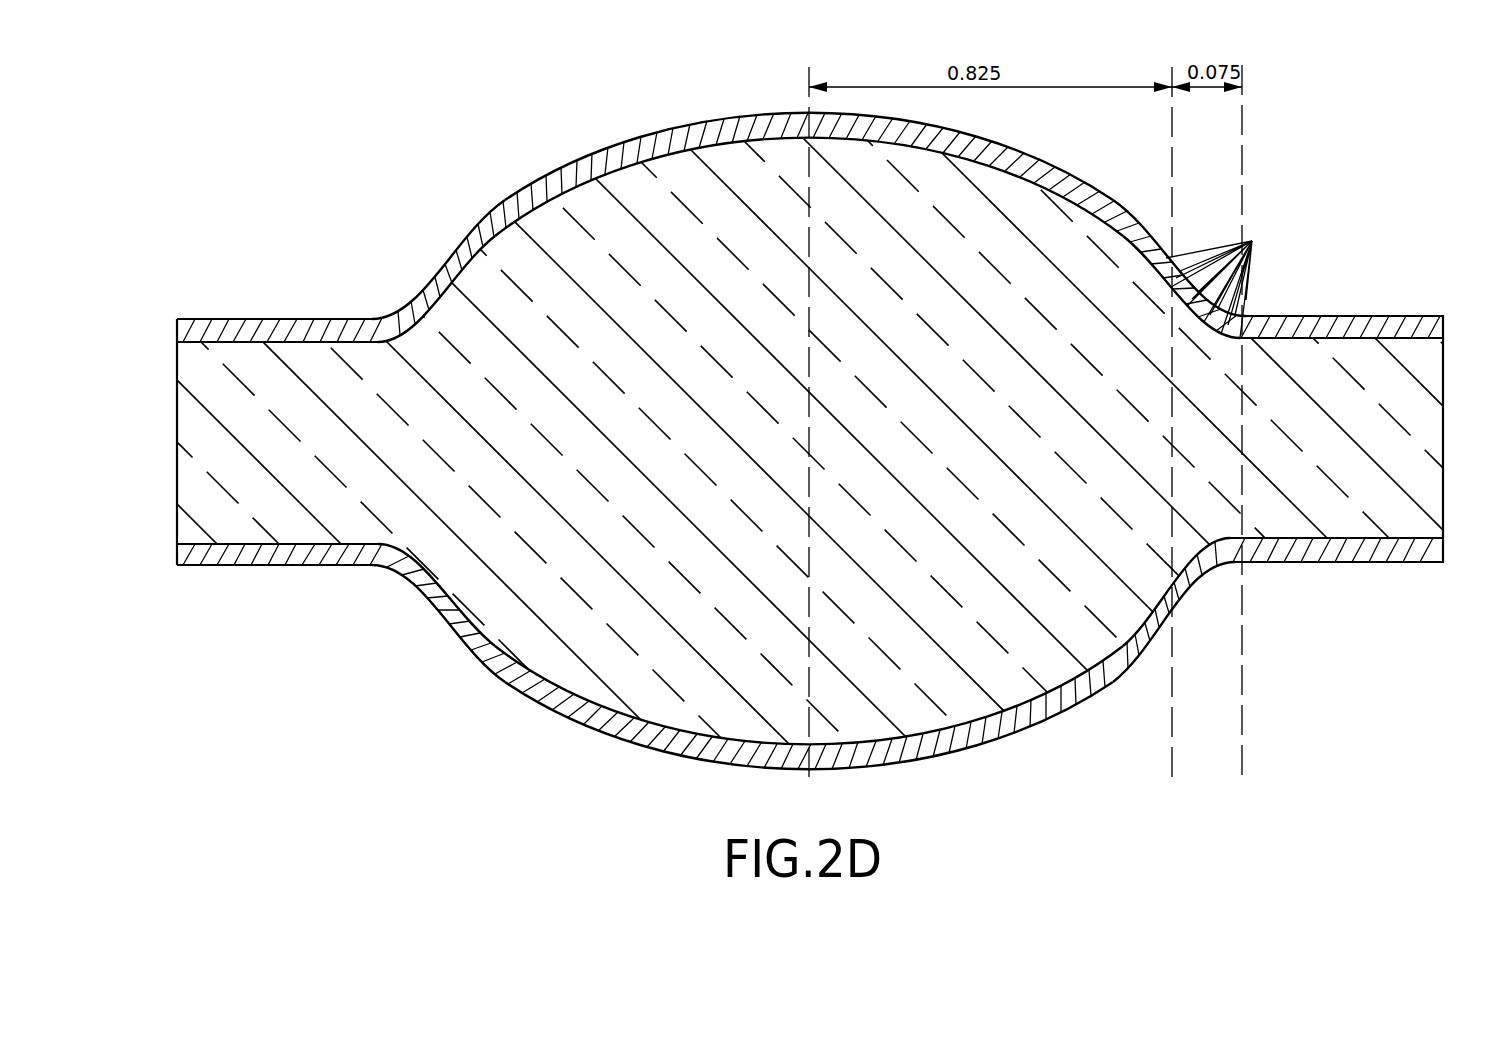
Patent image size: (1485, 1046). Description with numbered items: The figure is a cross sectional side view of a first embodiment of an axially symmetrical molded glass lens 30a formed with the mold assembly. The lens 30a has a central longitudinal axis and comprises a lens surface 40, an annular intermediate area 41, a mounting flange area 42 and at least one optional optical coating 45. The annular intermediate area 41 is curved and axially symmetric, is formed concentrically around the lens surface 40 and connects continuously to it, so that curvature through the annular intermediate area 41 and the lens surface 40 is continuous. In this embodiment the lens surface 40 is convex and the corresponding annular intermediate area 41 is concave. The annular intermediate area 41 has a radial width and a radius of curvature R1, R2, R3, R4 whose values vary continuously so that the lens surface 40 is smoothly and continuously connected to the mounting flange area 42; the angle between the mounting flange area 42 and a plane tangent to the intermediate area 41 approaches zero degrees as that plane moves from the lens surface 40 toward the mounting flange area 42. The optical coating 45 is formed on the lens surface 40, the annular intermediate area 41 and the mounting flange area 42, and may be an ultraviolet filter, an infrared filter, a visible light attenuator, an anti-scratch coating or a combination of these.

The lens surface 40 is at (806, 135).
The annular intermediate area 41 is at (1190, 597).
The mounting flange area 42 is at (1427, 337).
The optical coating 45 is at (303, 328).
The axially symmetrical molded glass lens 30a is at (177, 546).
The radius of curvature R1 is at (1205, 262).
The radius of curvature R2 is at (1250, 262).
The radius of curvature R3 is at (1245, 295).
The radius of curvature R4 is at (1248, 301).